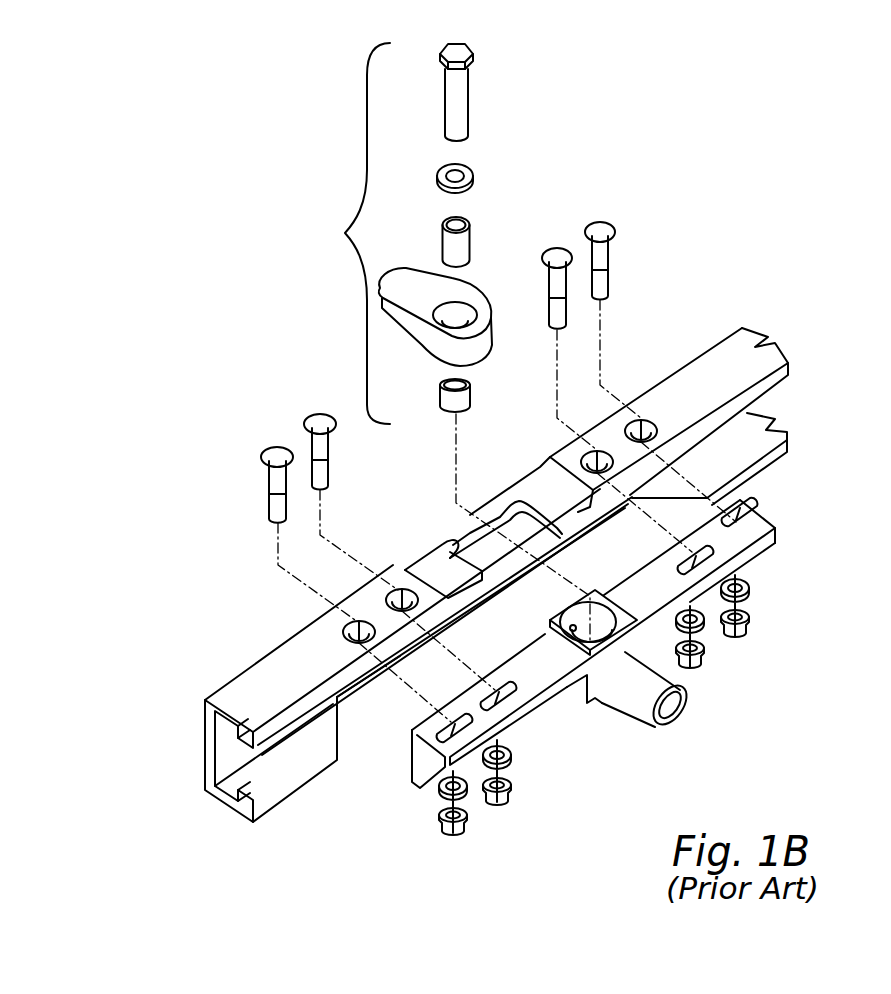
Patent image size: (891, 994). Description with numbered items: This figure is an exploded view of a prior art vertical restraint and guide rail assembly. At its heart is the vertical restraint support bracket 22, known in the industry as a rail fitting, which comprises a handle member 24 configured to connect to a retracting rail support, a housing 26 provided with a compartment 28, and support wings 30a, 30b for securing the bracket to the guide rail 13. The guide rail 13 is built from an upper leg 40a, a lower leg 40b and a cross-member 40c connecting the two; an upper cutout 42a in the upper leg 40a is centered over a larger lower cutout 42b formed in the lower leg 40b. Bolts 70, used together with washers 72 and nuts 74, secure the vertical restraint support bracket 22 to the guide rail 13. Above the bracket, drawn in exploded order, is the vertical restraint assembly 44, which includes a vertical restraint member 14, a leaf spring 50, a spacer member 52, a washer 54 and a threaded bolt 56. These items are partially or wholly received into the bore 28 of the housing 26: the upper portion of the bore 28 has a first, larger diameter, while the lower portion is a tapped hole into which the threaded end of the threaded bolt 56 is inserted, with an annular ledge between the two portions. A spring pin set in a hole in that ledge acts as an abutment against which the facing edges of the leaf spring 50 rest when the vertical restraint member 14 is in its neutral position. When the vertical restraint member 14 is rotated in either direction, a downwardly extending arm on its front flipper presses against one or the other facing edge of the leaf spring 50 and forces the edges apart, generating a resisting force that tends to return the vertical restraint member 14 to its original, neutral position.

The guide rail 13 is at (700, 384).
The vertical restraint member 14 is at (493, 324).
The vertical restraint support bracket 22 is at (407, 788).
The handle member 24 is at (623, 710).
The housing 26 is at (593, 710).
The compartment (bore) 28 is at (601, 612).
The support wing 30a is at (770, 522).
The support wing 30b is at (538, 678).
The upper leg 40a is at (263, 687).
The lower leg 40b is at (303, 770).
The cross-member 40c is at (216, 760).
The upper cutout 42a is at (478, 553).
The lower cutout 42b is at (371, 706).
The vertical restraint assembly 44 is at (354, 233).
The leaf spring 50 is at (438, 390).
The spacer member 52 is at (471, 236).
The washer 54 is at (474, 178).
The threaded bolt 56 is at (470, 92).
The bolts 70 is at (268, 478).
The washers 72 is at (751, 590).
The nuts 74 is at (750, 622).